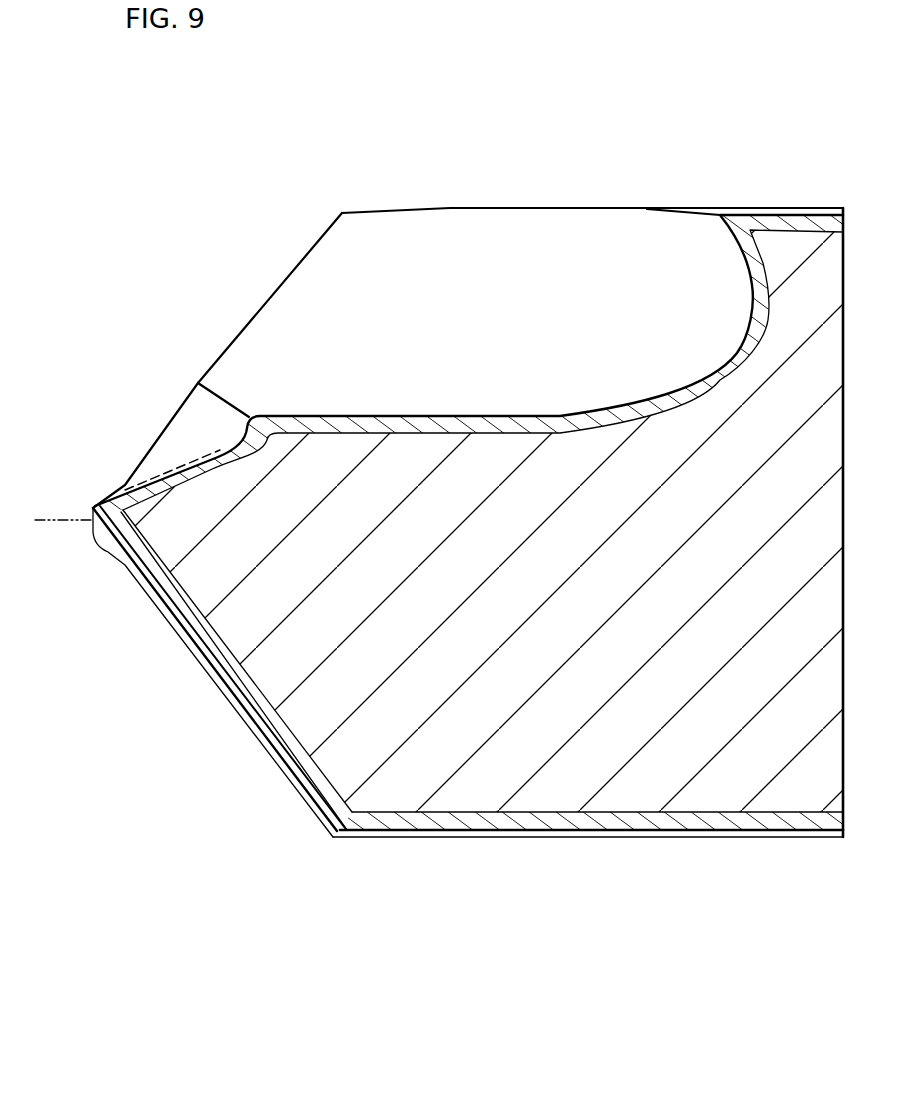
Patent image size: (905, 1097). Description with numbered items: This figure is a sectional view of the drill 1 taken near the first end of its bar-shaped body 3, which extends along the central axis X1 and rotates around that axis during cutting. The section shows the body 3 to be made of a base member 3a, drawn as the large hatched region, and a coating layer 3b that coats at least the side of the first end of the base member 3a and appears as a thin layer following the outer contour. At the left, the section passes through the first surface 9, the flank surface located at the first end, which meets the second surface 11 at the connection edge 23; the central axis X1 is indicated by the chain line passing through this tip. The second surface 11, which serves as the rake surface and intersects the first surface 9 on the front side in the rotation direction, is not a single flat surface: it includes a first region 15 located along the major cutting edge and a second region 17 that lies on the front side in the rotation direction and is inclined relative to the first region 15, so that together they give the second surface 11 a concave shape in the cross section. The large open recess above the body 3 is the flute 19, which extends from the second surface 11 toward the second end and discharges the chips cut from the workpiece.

The drill 1 is at (431, 493).
The body 3 is at (588, 834).
The base member 3a is at (591, 834).
The coating layer 3b is at (588, 871).
The first surface 9 is at (193, 645).
The second surface 11 is at (202, 360).
The first region 15 is at (130, 445).
The second region 17 is at (236, 324).
The flute 19 is at (485, 282).
The connection edge 23 is at (90, 531).
The central axis X1 is at (63, 503).